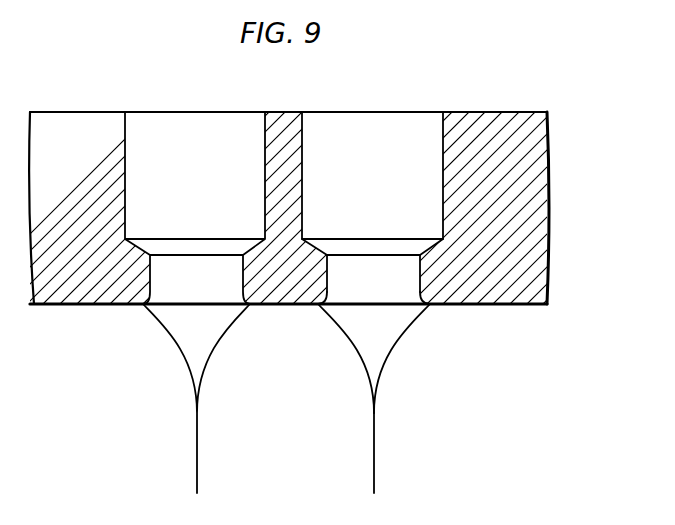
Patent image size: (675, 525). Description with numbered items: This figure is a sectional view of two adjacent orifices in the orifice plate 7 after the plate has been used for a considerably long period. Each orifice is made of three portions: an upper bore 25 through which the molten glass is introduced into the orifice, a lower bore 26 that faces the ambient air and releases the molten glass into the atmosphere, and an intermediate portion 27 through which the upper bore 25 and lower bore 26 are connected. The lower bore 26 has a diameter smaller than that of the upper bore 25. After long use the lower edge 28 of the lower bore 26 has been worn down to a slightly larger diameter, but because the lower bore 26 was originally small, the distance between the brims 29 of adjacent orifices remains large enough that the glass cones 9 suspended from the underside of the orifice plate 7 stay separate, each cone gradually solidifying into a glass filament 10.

The orifice plate 7 is at (540, 147).
The upper bore 25 is at (392, 117).
The intermediate portion 27 is at (426, 246).
The lower bore 26 is at (411, 279).
The lower edge 28 is at (411, 303).
The brim 29 is at (318, 305).
The glass cone 9 is at (355, 343).
The glass filament 10 is at (376, 449).